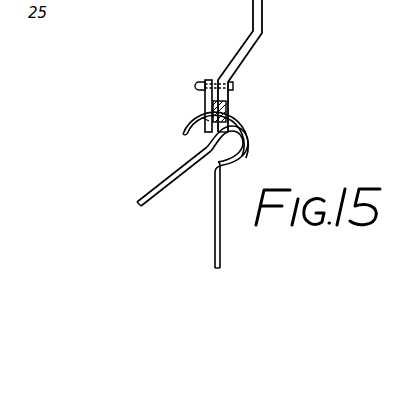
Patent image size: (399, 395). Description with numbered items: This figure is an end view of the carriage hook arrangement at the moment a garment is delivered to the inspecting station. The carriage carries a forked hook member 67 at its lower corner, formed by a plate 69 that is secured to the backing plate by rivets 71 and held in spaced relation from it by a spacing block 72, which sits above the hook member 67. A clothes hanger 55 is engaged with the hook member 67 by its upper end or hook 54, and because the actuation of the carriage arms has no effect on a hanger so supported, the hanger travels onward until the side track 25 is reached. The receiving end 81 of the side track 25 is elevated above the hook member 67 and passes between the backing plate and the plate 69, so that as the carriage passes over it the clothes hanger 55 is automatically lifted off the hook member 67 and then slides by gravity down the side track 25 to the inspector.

The side track 25 is at (149, 191).
The hook 54 is at (186, 128).
The clothes hanger 55 is at (213, 238).
The hook member 67 is at (248, 141).
The plate 69 is at (208, 120).
The rivets 71 is at (199, 86).
The spacing block 72 is at (222, 77).
The receiving end 81 is at (224, 101).